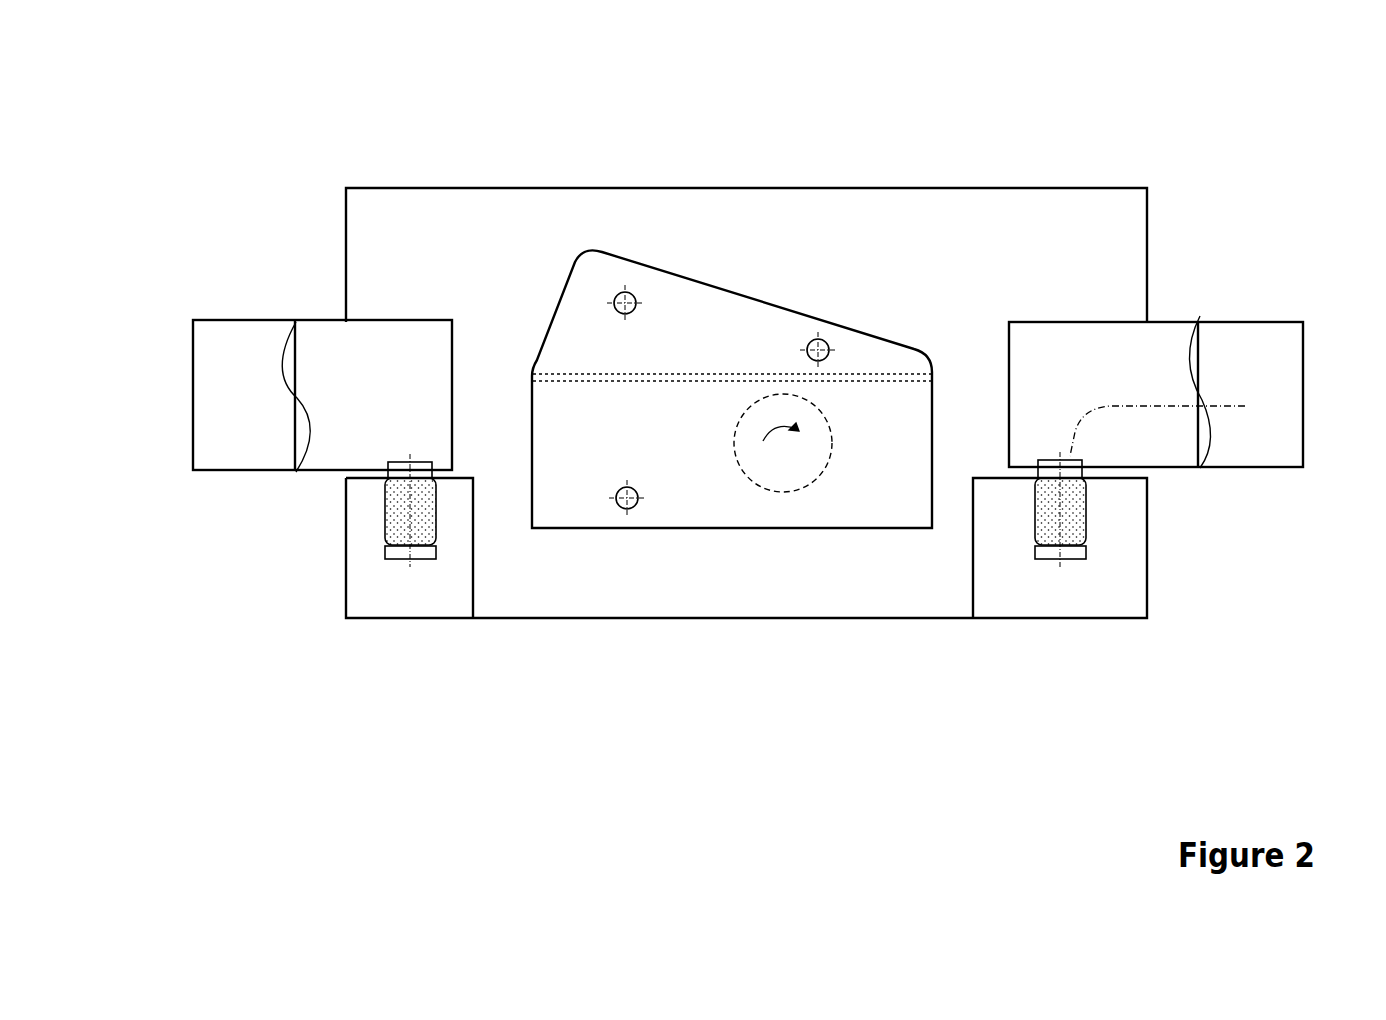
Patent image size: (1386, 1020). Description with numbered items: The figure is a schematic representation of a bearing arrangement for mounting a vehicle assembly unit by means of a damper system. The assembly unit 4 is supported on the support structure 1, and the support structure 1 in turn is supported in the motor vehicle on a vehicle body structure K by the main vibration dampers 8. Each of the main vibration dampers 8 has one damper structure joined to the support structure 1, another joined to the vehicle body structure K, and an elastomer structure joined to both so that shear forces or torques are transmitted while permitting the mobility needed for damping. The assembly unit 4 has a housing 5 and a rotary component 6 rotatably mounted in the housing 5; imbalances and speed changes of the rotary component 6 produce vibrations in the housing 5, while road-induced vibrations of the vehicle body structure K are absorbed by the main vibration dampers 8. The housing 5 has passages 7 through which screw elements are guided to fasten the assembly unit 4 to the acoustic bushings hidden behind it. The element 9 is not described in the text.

The support structure 1 is at (598, 605).
The assembly unit 4 is at (551, 265).
The housing 5 is at (578, 363).
The rotary component 6 is at (787, 478).
The passage 7 is at (634, 490).
The main vibration dampers 8 is at (396, 502).
The screw head 9 is at (1167, 426).
The vehicle body structure K is at (300, 350).